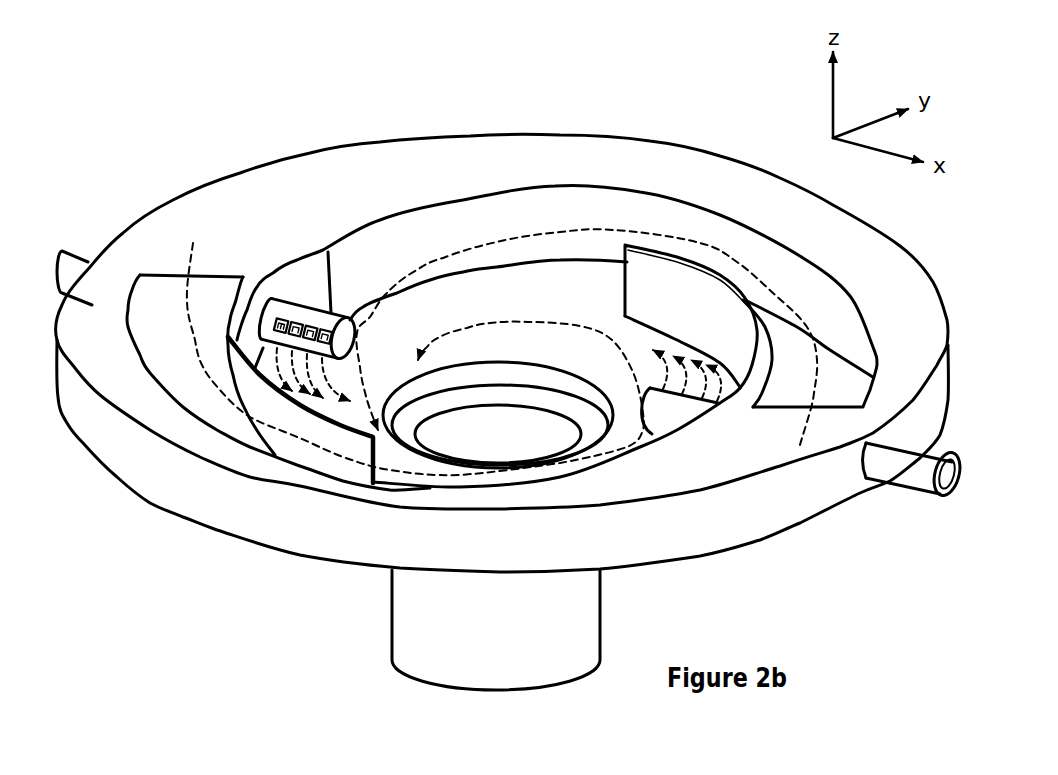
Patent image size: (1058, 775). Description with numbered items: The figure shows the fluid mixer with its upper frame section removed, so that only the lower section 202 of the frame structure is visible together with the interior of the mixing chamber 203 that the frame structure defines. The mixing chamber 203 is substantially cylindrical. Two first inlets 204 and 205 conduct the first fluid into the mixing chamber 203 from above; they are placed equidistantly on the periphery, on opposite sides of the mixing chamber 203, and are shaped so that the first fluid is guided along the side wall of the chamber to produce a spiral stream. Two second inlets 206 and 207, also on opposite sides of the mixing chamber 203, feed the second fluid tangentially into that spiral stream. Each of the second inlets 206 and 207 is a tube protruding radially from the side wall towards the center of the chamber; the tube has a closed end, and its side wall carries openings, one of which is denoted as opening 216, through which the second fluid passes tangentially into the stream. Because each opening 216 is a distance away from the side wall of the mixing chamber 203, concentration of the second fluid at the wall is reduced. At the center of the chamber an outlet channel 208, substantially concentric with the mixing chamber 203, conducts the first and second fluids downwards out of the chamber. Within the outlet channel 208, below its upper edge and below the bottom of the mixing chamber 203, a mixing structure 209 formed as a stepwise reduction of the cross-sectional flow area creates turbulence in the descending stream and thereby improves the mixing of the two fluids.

The lower section 202 is at (193, 488).
The mixing chamber 203 is at (522, 290).
The first inlet 204 is at (787, 287).
The first inlet 205 is at (163, 300).
The second inlet 206 is at (310, 318).
The second inlet 207 is at (657, 420).
The outlet channel 208 is at (480, 435).
The mixing structure 209 is at (578, 427).
The opening 216 is at (283, 333).